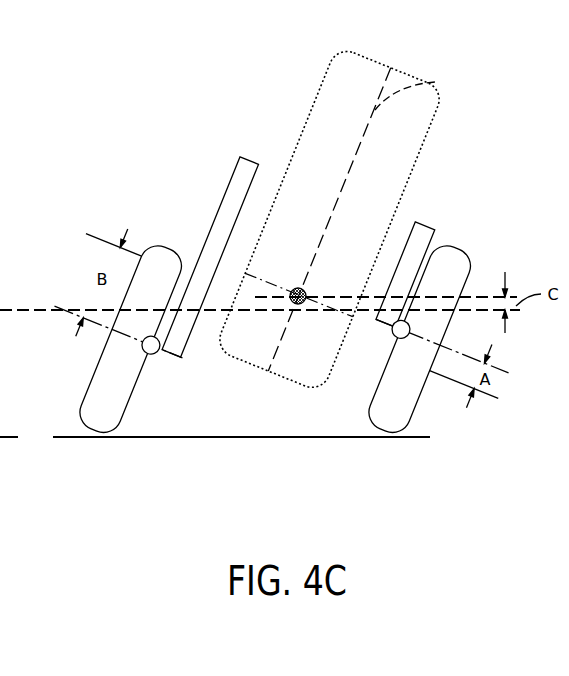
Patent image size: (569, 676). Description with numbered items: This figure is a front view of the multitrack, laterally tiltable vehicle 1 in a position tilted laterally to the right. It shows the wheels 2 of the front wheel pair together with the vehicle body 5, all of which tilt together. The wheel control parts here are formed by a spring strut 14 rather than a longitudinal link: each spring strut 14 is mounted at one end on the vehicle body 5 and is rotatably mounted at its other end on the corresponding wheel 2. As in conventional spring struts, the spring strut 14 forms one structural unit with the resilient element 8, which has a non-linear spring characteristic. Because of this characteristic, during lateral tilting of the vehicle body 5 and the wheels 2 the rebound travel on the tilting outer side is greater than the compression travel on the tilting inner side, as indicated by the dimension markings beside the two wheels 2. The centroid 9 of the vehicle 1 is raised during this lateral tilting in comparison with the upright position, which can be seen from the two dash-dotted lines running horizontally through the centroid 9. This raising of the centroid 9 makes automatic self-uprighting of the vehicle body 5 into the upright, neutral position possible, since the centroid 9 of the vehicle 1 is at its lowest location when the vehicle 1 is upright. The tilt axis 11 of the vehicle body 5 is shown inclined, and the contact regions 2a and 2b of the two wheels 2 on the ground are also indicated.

The vehicle 1 is at (247, 40).
The wheel 2 is at (105, 419).
The first wheel contact point 2a is at (385, 442).
The second wheel contact point 2b is at (93, 442).
The vehicle body 5 is at (316, 98).
The resilient element 8 is at (250, 180).
The centroid 9 is at (298, 305).
The vertical axis of body 11 is at (436, 83).
The spring strut 14 is at (296, 247).